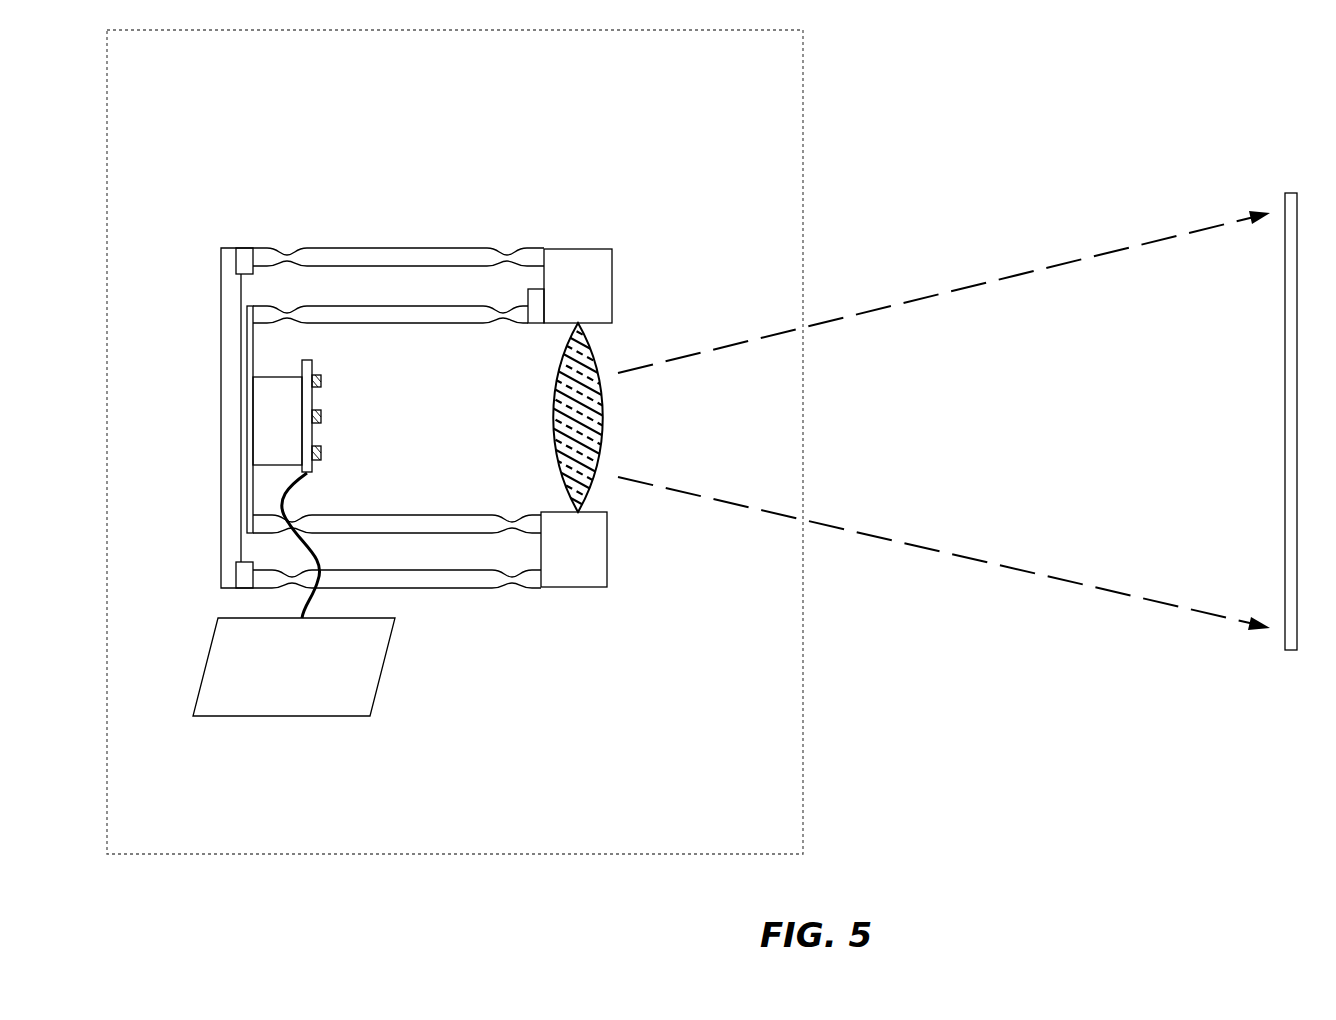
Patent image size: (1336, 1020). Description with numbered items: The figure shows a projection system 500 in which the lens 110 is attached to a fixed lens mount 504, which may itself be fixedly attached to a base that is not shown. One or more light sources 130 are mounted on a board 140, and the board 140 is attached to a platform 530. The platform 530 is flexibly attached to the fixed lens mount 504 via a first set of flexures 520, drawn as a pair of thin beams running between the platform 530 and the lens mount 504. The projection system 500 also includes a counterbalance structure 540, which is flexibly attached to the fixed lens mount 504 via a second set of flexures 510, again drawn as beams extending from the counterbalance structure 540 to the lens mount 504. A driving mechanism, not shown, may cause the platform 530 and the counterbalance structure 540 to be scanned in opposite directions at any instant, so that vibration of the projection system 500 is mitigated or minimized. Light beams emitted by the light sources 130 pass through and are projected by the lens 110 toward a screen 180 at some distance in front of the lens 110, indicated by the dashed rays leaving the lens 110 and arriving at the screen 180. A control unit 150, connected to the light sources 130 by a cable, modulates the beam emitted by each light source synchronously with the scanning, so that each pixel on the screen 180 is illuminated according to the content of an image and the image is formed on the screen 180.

The projection system 500 is at (803, 585).
The counterbalance structure 540 is at (225, 343).
The platform 530 is at (247, 410).
The second set of flexures 510 is at (470, 250).
The first set of flexures 520 is at (380, 314).
The fixed lens mount 504 is at (573, 268).
The light sources 130 is at (320, 380).
The board 140 is at (313, 362).
The lens 110 is at (557, 383).
The control unit 150 is at (310, 718).
The screen 180 is at (1285, 366).